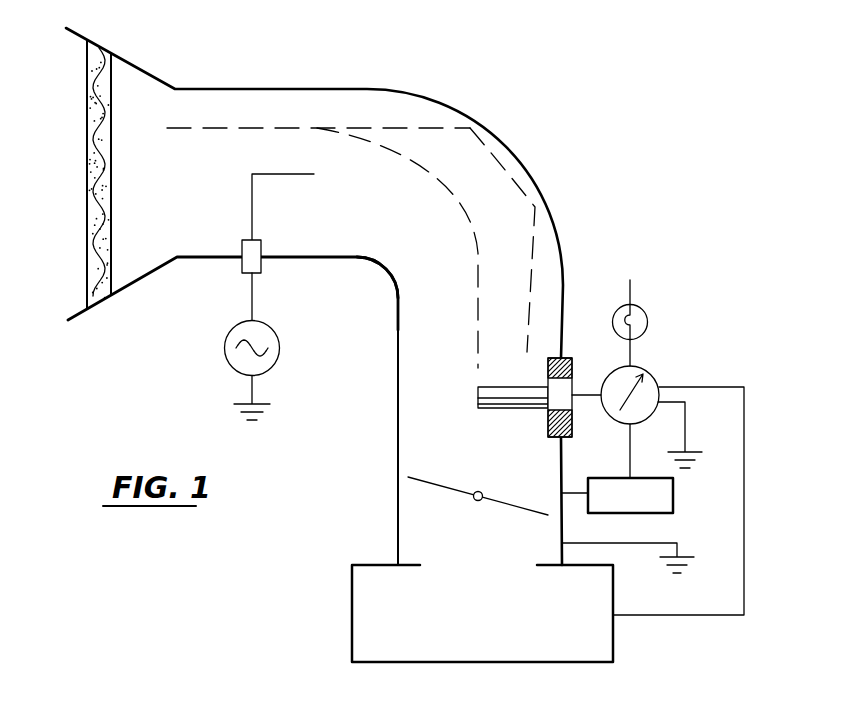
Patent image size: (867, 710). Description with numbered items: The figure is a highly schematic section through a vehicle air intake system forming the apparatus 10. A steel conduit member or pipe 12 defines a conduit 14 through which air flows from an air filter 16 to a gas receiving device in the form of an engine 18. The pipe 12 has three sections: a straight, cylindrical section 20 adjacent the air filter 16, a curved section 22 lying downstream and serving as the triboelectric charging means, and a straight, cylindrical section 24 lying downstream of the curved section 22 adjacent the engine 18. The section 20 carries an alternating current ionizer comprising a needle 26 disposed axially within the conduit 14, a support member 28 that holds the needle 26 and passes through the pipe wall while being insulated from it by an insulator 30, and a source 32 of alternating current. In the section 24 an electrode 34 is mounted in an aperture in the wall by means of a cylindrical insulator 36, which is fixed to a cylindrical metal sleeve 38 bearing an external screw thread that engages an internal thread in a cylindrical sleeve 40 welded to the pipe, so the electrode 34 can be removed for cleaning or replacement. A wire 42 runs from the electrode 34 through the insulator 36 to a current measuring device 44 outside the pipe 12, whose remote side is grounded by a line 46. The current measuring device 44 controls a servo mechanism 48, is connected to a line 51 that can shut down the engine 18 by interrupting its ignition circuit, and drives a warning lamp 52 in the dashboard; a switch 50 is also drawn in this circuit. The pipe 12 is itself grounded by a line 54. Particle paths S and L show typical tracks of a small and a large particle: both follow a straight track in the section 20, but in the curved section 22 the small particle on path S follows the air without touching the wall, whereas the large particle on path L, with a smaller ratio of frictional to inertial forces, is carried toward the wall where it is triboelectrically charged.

The apparatus 10 is at (395, 80).
The conduit member or pipe 12 is at (262, 89).
The conduit 14 is at (167, 189).
The air filter 16 is at (97, 180).
The engine 18 is at (532, 664).
The straight cylindrical section 20 is at (303, 259).
The curved section 22 is at (382, 270).
The straight cylindrical section 24 is at (398, 403).
The needle 26 is at (303, 175).
The support member 28 is at (262, 234).
The insulator 30 is at (243, 265).
The source of alternating current 32 is at (225, 353).
The electrode 34 is at (513, 393).
The cylindrical insulator 36 is at (557, 403).
The cylindrical metal sleeve 38 is at (572, 377).
The cylindrical sleeve 40 is at (566, 358).
The wire 42 is at (595, 395).
The current measuring device 44 is at (655, 377).
The line 46 is at (695, 410).
The servo mechanism 48 is at (660, 515).
The switch 50 is at (515, 508).
The line 51 is at (744, 582).
The warning lamp 52 is at (643, 309).
The line 54 is at (638, 545).
The particle path S is at (458, 202).
The particle path L is at (511, 173).